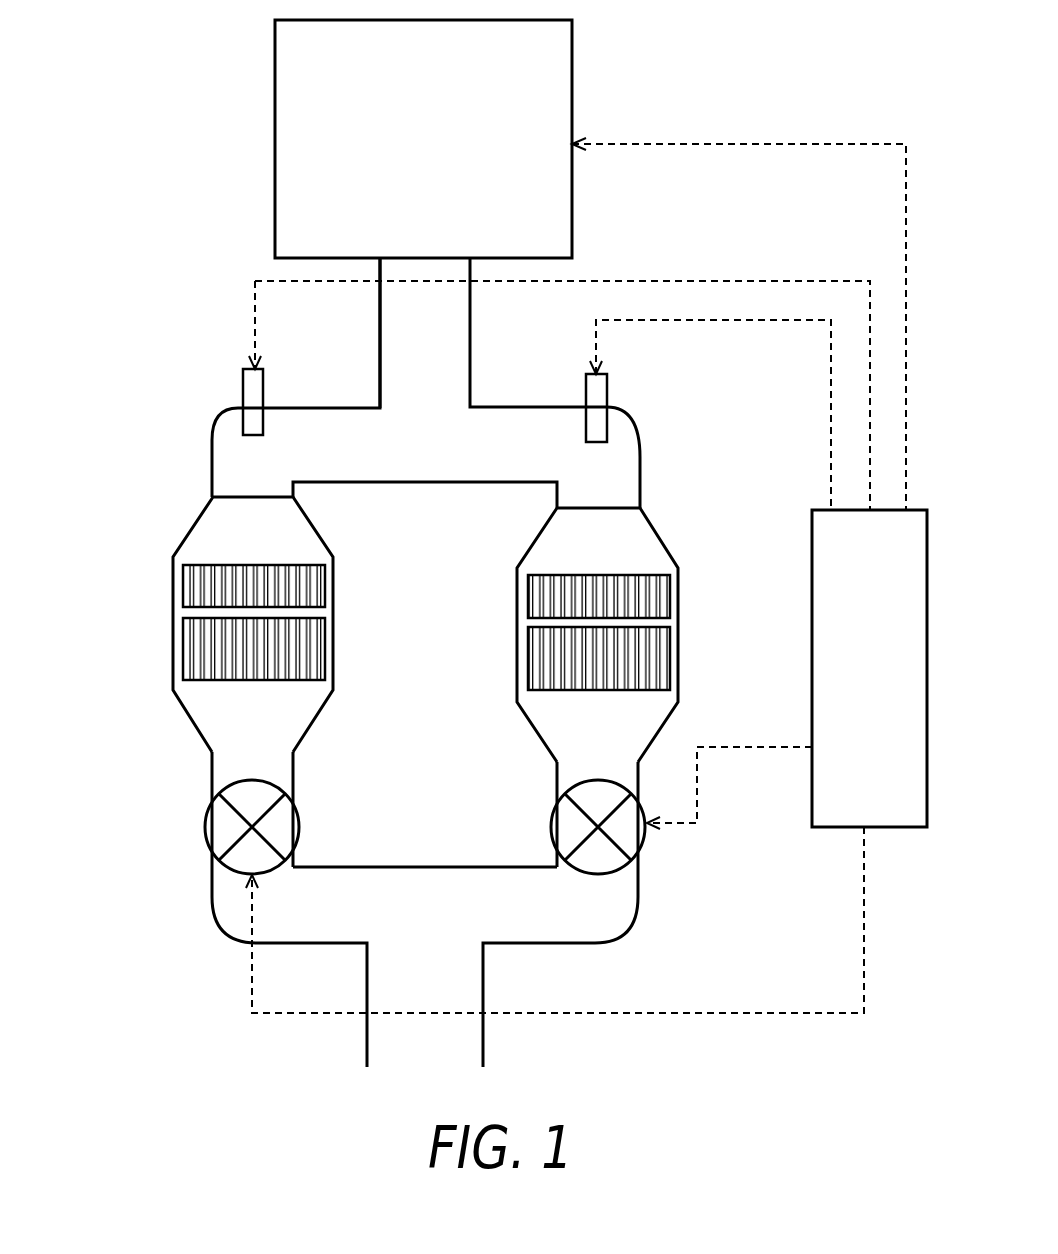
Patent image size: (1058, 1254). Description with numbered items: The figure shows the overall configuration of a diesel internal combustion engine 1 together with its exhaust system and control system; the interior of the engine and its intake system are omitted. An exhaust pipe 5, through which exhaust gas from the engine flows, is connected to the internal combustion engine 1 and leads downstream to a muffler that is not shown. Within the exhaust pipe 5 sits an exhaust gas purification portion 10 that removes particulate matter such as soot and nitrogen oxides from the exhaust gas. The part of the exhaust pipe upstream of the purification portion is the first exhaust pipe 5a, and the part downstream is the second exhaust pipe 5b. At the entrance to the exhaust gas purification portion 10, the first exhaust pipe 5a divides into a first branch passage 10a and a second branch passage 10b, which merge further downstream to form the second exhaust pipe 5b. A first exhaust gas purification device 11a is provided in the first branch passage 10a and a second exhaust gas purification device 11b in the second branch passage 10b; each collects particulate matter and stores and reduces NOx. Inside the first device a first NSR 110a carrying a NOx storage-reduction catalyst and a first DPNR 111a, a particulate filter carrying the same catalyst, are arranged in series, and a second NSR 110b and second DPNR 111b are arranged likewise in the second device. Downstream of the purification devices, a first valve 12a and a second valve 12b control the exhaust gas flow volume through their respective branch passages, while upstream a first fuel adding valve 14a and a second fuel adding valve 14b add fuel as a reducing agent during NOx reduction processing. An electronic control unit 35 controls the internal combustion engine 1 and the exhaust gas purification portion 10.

The internal combustion engine 1 is at (572, 124).
The exhaust pipe 5 is at (478, 332).
The first exhaust pipe 5a is at (380, 307).
The second exhaust pipe 5b is at (483, 1003).
The exhaust gas purification portion 10 is at (683, 510).
The first branch passage 10a is at (212, 752).
The second branch passage 10b is at (557, 762).
The first exhaust gas purification device 11a is at (245, 624).
The second exhaust gas purification device 11b is at (599, 635).
The first NSR 110a is at (182, 597).
The second NSR 110b is at (527, 597).
The first DPNR 111a is at (182, 668).
The second DPNR 111b is at (527, 668).
The first valve 12a is at (207, 818).
The second valve 12b is at (552, 818).
The first fuel adding valve 14a is at (243, 399).
The second fuel adding valve 14b is at (607, 393).
The electronic control unit (ECU) 35 is at (812, 618).